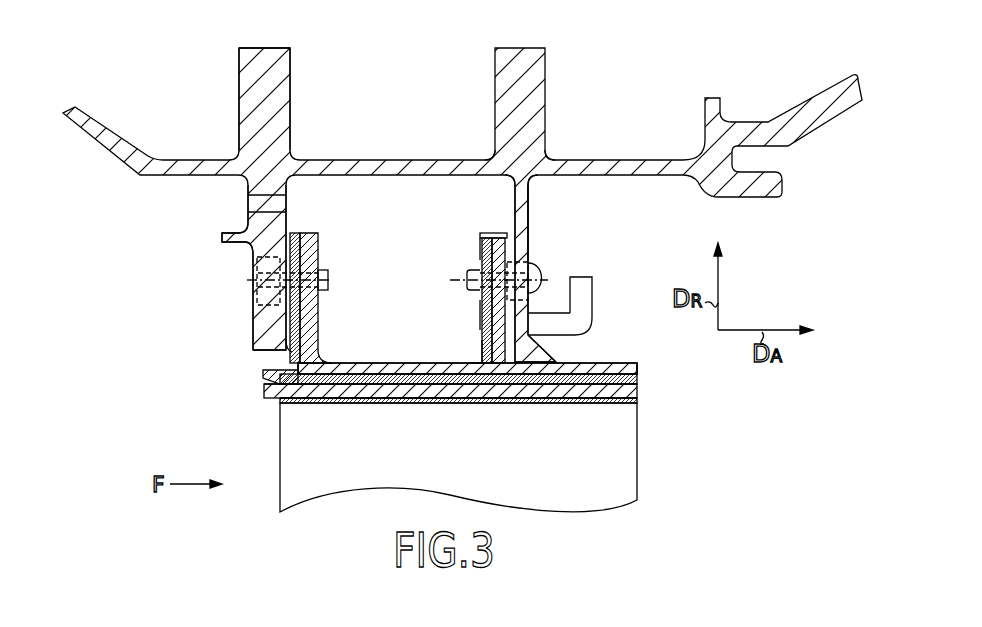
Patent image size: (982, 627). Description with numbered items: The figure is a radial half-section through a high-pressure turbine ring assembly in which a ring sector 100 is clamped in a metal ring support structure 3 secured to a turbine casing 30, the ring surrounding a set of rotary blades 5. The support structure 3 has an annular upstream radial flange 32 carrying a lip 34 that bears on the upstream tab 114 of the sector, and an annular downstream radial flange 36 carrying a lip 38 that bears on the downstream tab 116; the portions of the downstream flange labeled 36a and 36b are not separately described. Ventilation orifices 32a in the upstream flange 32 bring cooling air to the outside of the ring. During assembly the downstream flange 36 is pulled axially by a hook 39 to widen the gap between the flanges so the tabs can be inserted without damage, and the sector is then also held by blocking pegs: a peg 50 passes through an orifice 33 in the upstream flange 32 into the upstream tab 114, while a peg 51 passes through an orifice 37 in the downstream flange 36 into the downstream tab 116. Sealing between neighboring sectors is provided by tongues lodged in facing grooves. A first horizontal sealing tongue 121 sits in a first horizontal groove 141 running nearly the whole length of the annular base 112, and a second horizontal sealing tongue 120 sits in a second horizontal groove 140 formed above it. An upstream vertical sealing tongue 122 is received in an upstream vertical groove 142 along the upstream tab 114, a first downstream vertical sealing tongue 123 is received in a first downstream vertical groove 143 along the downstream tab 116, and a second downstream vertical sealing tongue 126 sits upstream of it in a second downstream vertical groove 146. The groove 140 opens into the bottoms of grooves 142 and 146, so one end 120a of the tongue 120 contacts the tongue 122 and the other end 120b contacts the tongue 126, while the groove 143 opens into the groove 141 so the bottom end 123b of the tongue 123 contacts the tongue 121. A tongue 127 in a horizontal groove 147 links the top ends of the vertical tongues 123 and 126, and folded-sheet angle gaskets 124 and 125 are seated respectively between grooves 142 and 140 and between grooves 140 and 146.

The metal ring support structure 3 is at (381, 70).
The turbine casing 30 is at (290, 82).
The ventilation orifices 32a is at (255, 200).
The annular upstream radial flange 32 is at (222, 238).
The orifice 33 is at (270, 318).
The upstream vertical groove 142 is at (270, 353).
The lip 34 is at (262, 377).
The first angle gasket 124 is at (265, 398).
The upstream tab 114 is at (312, 238).
The peg 50 is at (328, 280).
The upstream vertical sealing tongue 122 is at (302, 306).
The ring sector 100 is at (352, 366).
The second horizontal sealing tongue 120 is at (402, 366).
The second angle gasket 125 is at (478, 362).
The horizontal groove 147 is at (490, 236).
The second downstream vertical sealing tongue 126 is at (482, 250).
The tongue 127 is at (497, 233).
The downstream tab 116 is at (482, 258).
The peg 51 is at (468, 278).
The second downstream vertical groove 146 is at (483, 312).
The first downstream vertical sealing tongue 123 is at (528, 225).
The annular downstream radial flange 36 is at (530, 240).
The orifice 37 is at (540, 263).
The lip 38 is at (565, 302).
The hook 39 is at (580, 306).
The first downstream vertical groove 143 is at (510, 352).
The first horizontal sealing tongue 121 is at (636, 386).
The annular base 112 is at (632, 392).
The end of second horizontal sealing tongue 120a is at (313, 398).
The second horizontal groove 140 is at (385, 398).
The first horizontal groove 141 is at (442, 398).
The end of second horizontal sealing tongue 120b is at (495, 398).
The bottom end of downstream vertical sealing tongue 123b is at (545, 398).
The upstream fillet 36b is at (495, 165).
The downstream fillet 36a is at (548, 165).
The rotary blades 5 is at (444, 491).